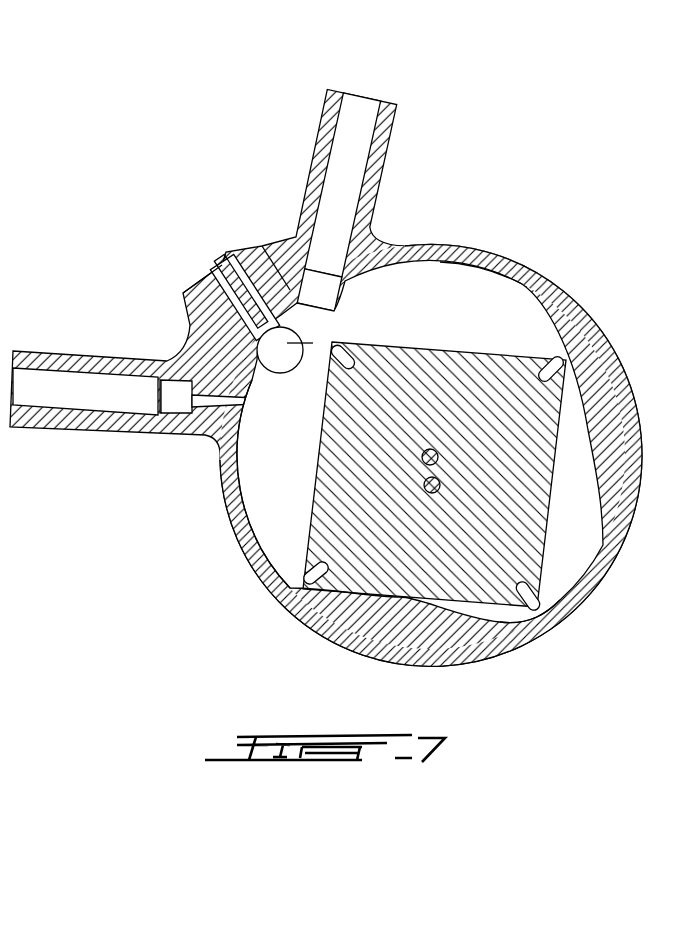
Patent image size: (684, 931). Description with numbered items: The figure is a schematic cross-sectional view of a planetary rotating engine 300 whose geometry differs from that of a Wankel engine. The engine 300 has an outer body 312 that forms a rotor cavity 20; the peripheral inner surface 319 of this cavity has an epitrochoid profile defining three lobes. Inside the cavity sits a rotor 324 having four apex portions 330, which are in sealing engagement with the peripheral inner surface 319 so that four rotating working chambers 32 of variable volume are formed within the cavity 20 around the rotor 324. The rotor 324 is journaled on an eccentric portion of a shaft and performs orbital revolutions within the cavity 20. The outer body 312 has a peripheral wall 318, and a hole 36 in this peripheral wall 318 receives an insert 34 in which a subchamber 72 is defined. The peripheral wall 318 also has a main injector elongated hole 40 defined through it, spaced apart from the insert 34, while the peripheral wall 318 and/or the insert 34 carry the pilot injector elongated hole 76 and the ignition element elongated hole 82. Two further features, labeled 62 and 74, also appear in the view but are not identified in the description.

The engine 300 is at (80, 160).
The pilot injector elongated hole 76 is at (360, 110).
The main injector elongated hole 40 is at (48, 383).
The rotor cavity 20 is at (578, 486).
The outer body 312 is at (255, 583).
The peripheral wall 318 is at (230, 498).
The hole 36 is at (212, 285).
The ignition element elongated hole 82 is at (240, 298).
The insert 34 is at (270, 262).
The retainer 62 is at (188, 282).
The subchamber 72 is at (300, 343).
The spring 74 is at (290, 372).
The peripheral inner surface 319 is at (493, 262).
The apex portions 330 is at (562, 362).
The rotor 324 is at (513, 423).
The working chambers 32 is at (565, 545).